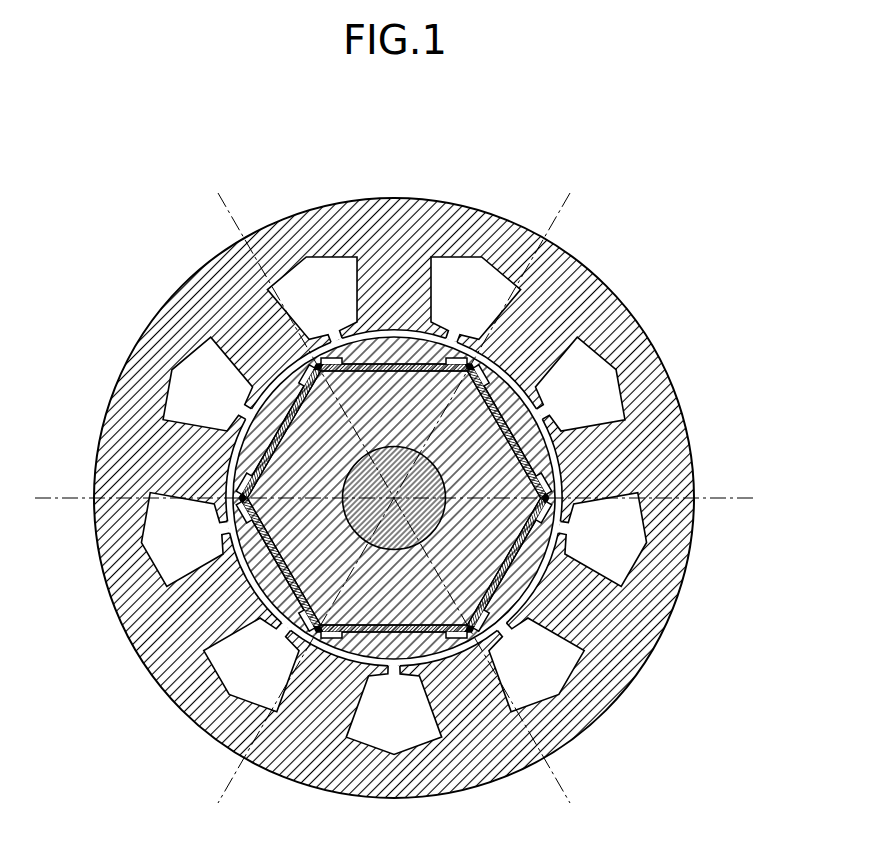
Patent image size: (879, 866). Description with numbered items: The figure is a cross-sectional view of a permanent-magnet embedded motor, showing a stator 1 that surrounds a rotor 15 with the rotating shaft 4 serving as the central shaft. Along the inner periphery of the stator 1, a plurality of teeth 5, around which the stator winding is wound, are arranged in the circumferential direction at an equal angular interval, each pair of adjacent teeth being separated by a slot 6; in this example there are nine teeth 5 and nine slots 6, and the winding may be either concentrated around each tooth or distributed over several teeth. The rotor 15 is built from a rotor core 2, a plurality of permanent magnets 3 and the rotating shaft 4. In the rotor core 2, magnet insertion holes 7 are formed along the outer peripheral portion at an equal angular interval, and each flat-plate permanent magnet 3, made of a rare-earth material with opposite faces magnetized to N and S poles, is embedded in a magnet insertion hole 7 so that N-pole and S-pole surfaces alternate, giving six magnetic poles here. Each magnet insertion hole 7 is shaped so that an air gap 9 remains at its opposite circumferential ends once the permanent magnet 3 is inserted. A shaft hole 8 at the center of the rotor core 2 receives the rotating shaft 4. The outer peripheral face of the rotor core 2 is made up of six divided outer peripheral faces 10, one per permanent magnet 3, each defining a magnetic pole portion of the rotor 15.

The stator 1 is at (382, 207).
The rotor core 2 is at (533, 400).
The permanent magnet 3 is at (516, 411).
The rotating shaft 4 is at (470, 420).
The teeth 5 is at (402, 277).
The slot 6 is at (490, 287).
The magnet insertion hole 7 is at (407, 360).
The shaft hole 8 is at (443, 482).
The air gap 9 is at (307, 352).
The divided outer peripheral face 10 is at (313, 368).
The rotor 15 is at (755, 292).